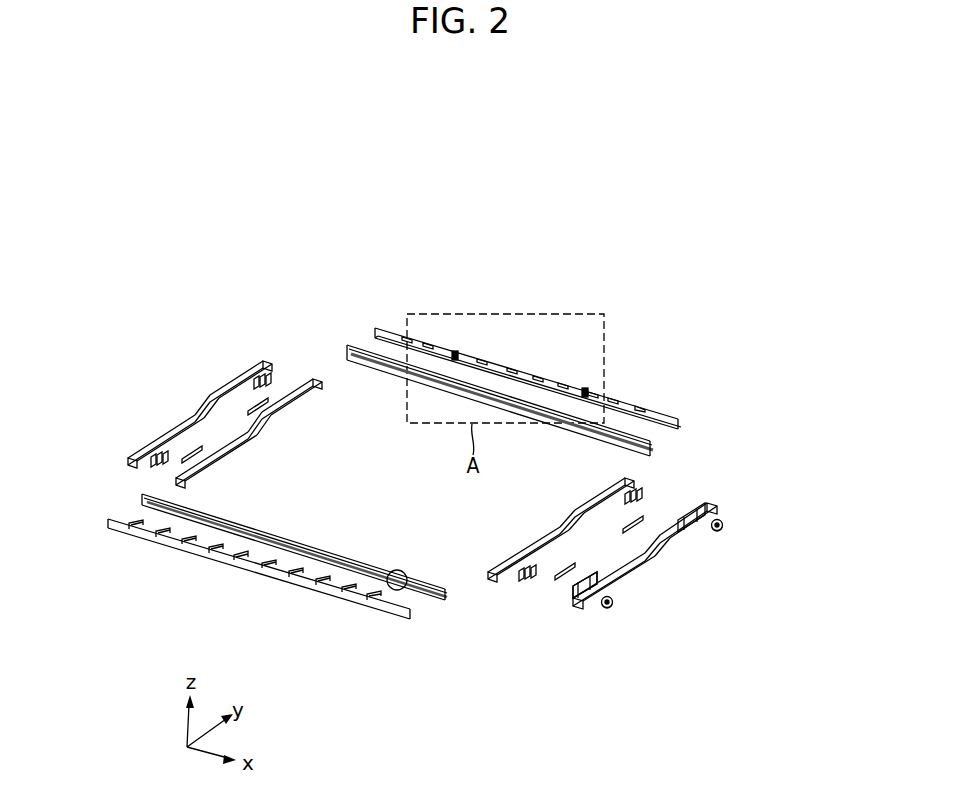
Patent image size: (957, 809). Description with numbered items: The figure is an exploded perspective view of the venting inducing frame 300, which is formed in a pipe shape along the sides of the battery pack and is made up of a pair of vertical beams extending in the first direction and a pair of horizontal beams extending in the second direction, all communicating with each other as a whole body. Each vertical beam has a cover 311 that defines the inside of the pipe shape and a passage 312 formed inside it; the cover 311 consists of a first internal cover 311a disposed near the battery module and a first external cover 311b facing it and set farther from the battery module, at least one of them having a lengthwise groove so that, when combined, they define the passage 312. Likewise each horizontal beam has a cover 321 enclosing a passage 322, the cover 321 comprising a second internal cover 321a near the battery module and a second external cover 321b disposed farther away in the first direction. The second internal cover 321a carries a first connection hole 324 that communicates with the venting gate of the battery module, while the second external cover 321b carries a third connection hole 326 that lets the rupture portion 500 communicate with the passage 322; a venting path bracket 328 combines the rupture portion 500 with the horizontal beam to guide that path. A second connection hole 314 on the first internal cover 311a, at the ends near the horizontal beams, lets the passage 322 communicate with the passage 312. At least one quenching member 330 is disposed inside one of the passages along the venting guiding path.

The venting inducing frame 300 is at (302, 178).
The cover 311 is at (281, 605).
The first internal cover 311a is at (430, 603).
The first external cover 311b is at (259, 602).
The passage 312 is at (390, 580).
The second connection hole 314 is at (346, 357).
The cover 321 is at (654, 516).
The second internal cover 321a is at (625, 477).
The second external cover 321b is at (675, 541).
The passage 322 is at (125, 459).
The first connection hole 324 is at (221, 458).
The third connection hole 326 is at (582, 608).
The venting path bracket 328 is at (558, 582).
The quenching member 330 is at (585, 392).
The rupture portion 500 is at (609, 606).